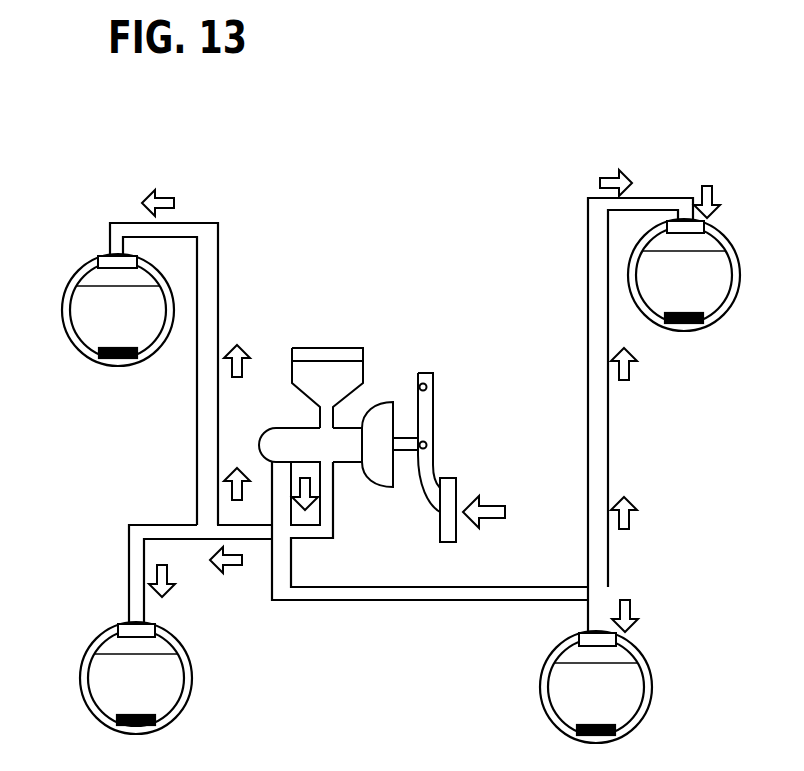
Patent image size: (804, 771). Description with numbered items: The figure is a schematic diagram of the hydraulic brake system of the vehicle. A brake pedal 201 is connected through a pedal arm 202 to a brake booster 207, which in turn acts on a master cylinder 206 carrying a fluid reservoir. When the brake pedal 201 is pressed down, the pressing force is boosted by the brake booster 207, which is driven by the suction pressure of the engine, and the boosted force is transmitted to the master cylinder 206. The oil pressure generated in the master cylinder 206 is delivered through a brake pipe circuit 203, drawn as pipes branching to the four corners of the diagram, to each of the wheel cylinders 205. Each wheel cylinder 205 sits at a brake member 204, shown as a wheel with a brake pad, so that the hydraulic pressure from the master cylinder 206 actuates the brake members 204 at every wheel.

The brake pedal 201 is at (457, 503).
The brake pedal arm 202 is at (408, 440).
The brake pipe circuit 203 is at (203, 418).
The brake members 204 is at (75, 348).
The wheel cylinders 205 is at (100, 260).
The master cylinder 206 is at (280, 435).
The brake booster 207 is at (380, 413).